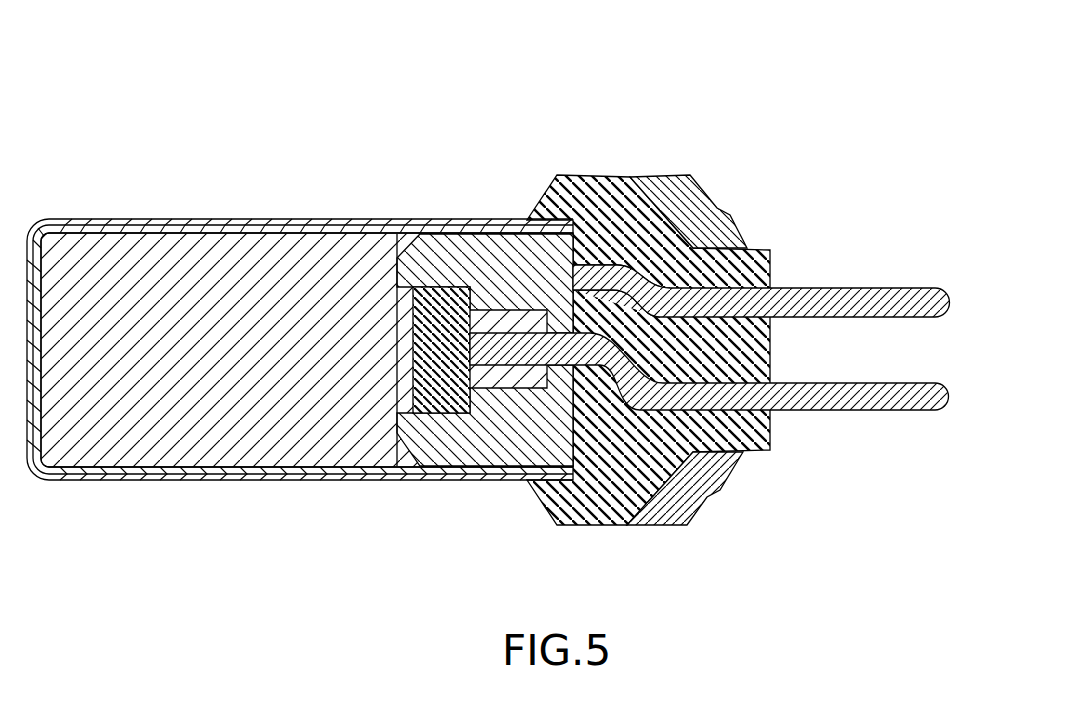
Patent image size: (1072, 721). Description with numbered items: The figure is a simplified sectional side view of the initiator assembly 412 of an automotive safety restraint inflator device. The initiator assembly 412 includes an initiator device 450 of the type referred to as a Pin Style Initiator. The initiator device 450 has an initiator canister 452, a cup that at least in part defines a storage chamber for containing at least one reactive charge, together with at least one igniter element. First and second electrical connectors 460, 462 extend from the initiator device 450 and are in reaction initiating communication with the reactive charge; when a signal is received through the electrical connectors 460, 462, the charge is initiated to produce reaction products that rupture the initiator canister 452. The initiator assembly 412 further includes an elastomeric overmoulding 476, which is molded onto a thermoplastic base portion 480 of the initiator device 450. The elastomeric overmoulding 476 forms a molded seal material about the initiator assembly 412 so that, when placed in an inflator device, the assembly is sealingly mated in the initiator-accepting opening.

The initiator assembly 412 is at (648, 321).
The initiator device 450 is at (348, 312).
The initiator canister 452 is at (167, 467).
The first electrical connector 460 is at (945, 298).
The second electrical connector 462 is at (945, 402).
The elastomeric overmoulding 476 is at (687, 525).
The thermoplastic base portion 480 is at (582, 525).